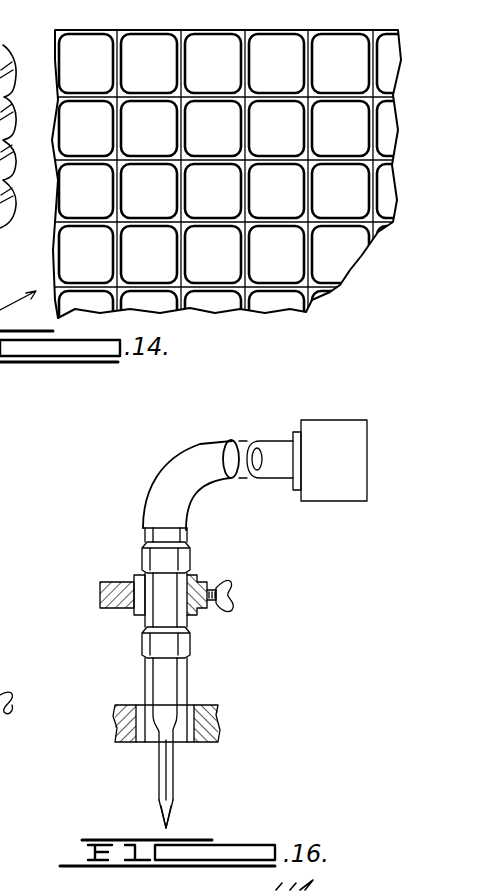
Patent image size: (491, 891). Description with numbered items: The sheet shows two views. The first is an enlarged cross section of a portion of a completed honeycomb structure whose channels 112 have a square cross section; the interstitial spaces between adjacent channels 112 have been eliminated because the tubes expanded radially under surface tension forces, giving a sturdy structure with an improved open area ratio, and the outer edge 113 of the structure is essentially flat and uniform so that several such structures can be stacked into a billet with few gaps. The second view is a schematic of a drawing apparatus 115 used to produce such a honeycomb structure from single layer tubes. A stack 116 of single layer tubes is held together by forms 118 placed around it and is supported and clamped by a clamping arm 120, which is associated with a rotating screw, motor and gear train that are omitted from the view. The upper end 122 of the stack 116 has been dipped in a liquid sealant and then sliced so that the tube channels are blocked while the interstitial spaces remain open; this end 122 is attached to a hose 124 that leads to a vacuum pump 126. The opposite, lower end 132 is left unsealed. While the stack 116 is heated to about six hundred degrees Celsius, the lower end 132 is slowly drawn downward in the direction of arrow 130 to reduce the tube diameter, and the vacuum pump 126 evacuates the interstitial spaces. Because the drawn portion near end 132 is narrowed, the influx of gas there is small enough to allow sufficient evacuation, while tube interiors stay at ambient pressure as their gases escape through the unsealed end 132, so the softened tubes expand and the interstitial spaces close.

In FIG. 14, the channels 112 is at (282, 286).
In FIG. 14, the outer edge 113 is at (216, 178).
In FIG. 16, the drawing apparatus 115 is at (220, 619).
In FIG. 16, the stack 116 is at (201, 677).
In FIG. 16, the forms 118 is at (188, 554).
In FIG. 16, the clamping arm 120 is at (118, 585).
In FIG. 16, the end of the stack 122 is at (198, 530).
In FIG. 16, the hose 124 is at (192, 455).
In FIG. 16, the vacuum pump 126 is at (325, 427).
In FIG. 16, the arrow 130 is at (179, 817).
In FIG. 16, the lower end of the stack 132 is at (170, 786).